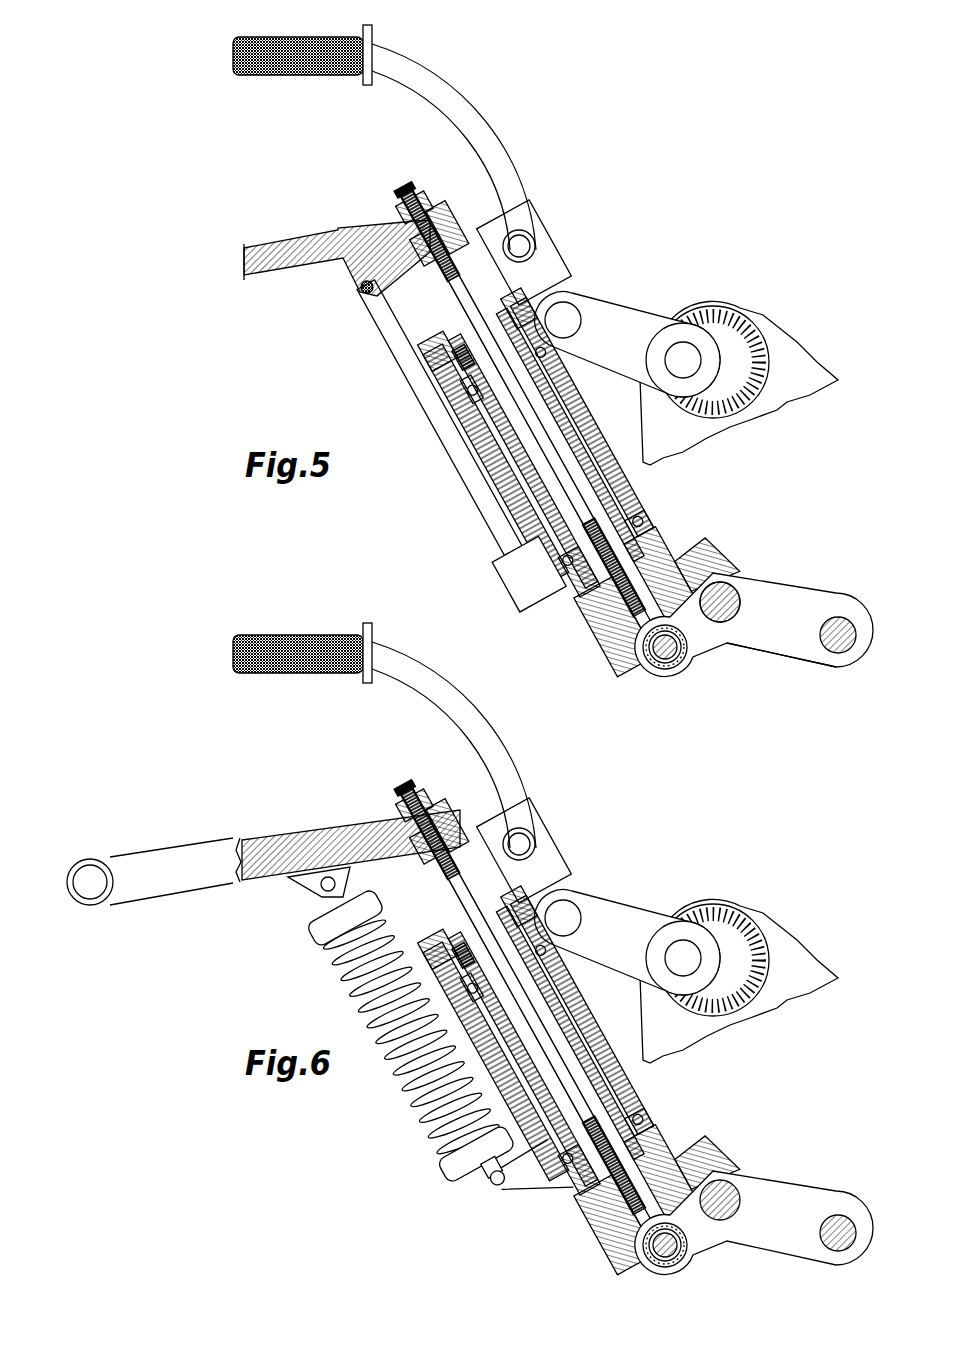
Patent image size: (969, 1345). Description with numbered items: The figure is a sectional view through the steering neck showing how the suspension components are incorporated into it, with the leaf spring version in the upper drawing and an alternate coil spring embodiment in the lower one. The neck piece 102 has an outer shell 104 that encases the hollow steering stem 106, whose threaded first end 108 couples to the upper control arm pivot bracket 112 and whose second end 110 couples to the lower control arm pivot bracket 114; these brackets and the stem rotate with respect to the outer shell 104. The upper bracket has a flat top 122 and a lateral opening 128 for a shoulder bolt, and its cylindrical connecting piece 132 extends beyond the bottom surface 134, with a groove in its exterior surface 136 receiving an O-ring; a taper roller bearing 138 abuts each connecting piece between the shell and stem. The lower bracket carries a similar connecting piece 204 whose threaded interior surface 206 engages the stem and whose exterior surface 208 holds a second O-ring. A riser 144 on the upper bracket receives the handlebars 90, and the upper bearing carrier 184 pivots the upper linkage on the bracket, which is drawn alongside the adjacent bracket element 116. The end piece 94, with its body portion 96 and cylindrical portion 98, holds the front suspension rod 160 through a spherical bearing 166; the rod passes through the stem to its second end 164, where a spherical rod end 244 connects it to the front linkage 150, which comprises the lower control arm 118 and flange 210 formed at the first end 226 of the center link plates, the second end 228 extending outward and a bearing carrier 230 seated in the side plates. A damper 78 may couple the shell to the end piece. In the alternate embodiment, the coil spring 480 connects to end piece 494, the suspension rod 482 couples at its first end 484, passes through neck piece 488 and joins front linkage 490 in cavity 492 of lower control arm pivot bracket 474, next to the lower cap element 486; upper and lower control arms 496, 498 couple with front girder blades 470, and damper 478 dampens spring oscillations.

In FIG. 5, the damper 78 is at (478, 500).
In FIG. 5, the handlebars 90 is at (502, 122).
In FIG. 5, the end piece 94 is at (358, 225).
In FIG. 5, the body portion 96 is at (355, 285).
In FIG. 5, the cylindrical portion 98 is at (440, 208).
In FIG. 5, the neck piece 102 is at (640, 486).
In FIG. 5, the outer shell 104 is at (578, 412).
In FIG. 5, the hollow steering stem 106 is at (488, 442).
In FIG. 5, the threaded first end 108 is at (503, 305).
In FIG. 5, the second end 110 is at (680, 548).
In FIG. 5, the upper control arm pivot bracket 112 is at (440, 373).
In FIG. 5, the lower control arm pivot bracket 114 is at (606, 668).
In FIG. 5, the mounting bracket 116 is at (660, 315).
In FIG. 5, the lower control arm 118 is at (818, 592).
In FIG. 5, the flat top 122 is at (545, 297).
In FIG. 5, the lateral opening 128 is at (580, 342).
In FIG. 5, the cylindrical connecting piece 132 is at (452, 388).
In FIG. 5, the bottom surface 134 is at (441, 382).
In FIG. 5, the exterior surface 136 is at (462, 403).
In FIG. 5, the taper roller bearing 138 is at (556, 380).
In FIG. 5, the riser 144 is at (548, 246).
In FIG. 5, the front linkage 150 is at (768, 655).
In FIG. 5, the front suspension rod 160 is at (558, 442).
In FIG. 5, the second end 164 is at (582, 621).
In FIG. 5, the spherical bearing 166 is at (425, 200).
In FIG. 5, the upper bearing carrier 184 is at (572, 315).
In FIG. 5, the cylindrical connecting piece 204 is at (665, 522).
In FIG. 5, the interior surface 206 is at (557, 598).
In FIG. 5, the exterior surface 208 is at (568, 584).
In FIG. 5, the flange 210 is at (658, 670).
In FIG. 5, the first end 226 is at (735, 578).
In FIG. 5, the second end 228 is at (843, 668).
In FIG. 5, the bearing carrier 230 is at (735, 582).
In FIG. 5, the spherical rod end 244 is at (680, 672).
In FIG. 6, the front girder blades 470 is at (746, 905).
In FIG. 6, the lower control arm pivot bracket 474 is at (738, 1160).
In FIG. 6, the damper 478 is at (428, 1087).
In FIG. 6, the coil spring 480 is at (340, 980).
In FIG. 6, the suspension rod 482 is at (460, 910).
In FIG. 6, the first end 484 is at (412, 800).
In FIG. 6, the lower end cap 486 is at (580, 1196).
In FIG. 6, the neck piece 488 is at (658, 1086).
In FIG. 6, the front linkage 490 is at (800, 1190).
In FIG. 6, the cavity 492 is at (694, 1140).
In FIG. 6, the end piece 494 is at (326, 830).
In FIG. 6, the upper control arm 496 is at (612, 897).
In FIG. 6, the lower control arm 498 is at (753, 1240).